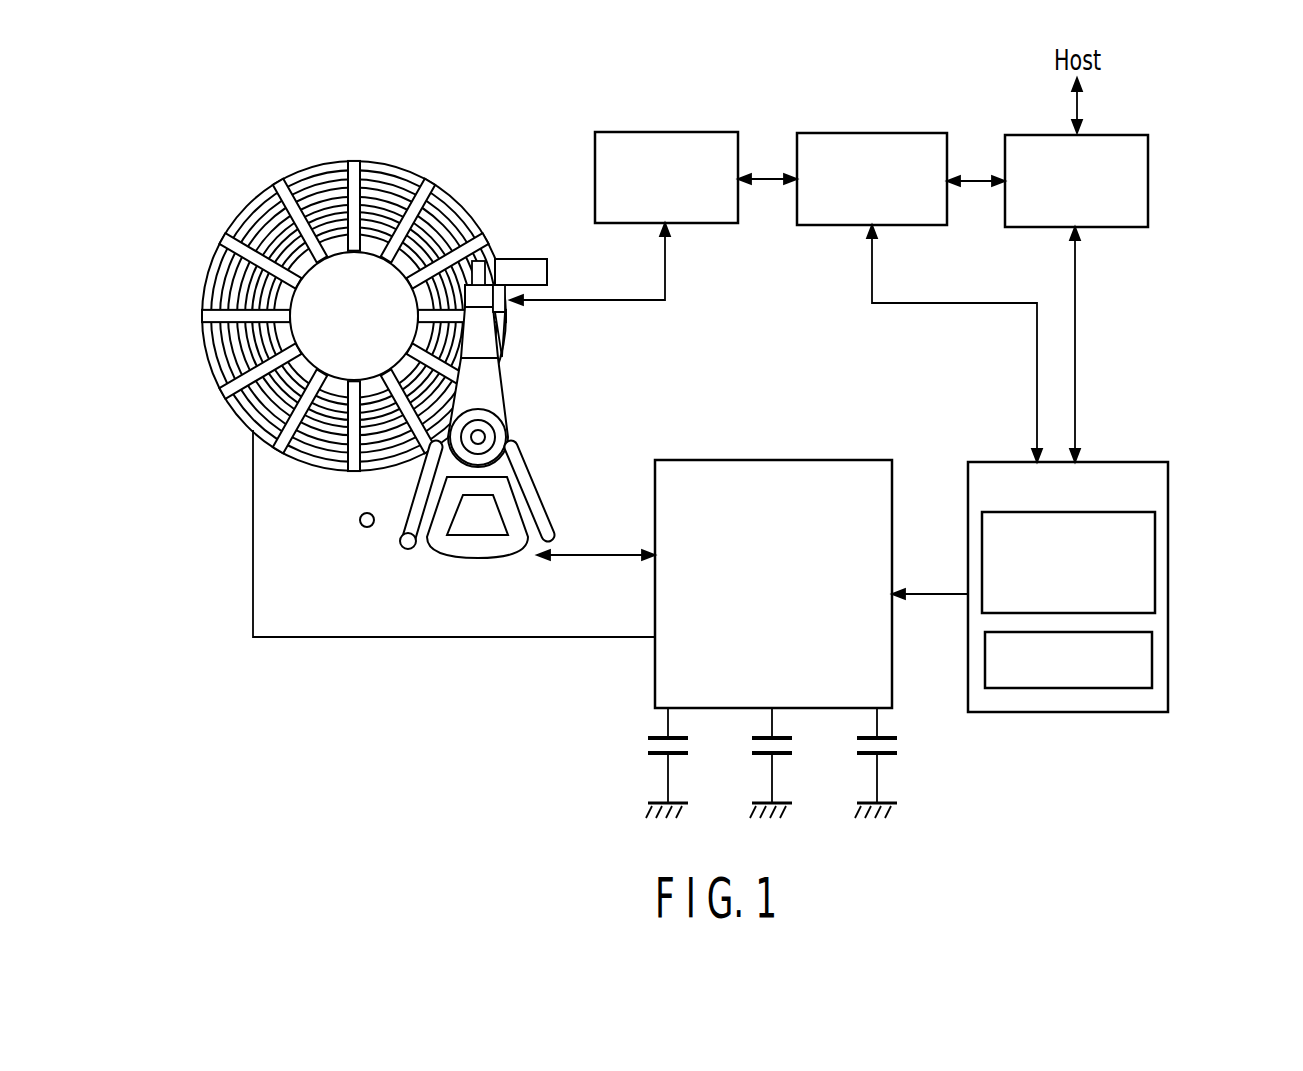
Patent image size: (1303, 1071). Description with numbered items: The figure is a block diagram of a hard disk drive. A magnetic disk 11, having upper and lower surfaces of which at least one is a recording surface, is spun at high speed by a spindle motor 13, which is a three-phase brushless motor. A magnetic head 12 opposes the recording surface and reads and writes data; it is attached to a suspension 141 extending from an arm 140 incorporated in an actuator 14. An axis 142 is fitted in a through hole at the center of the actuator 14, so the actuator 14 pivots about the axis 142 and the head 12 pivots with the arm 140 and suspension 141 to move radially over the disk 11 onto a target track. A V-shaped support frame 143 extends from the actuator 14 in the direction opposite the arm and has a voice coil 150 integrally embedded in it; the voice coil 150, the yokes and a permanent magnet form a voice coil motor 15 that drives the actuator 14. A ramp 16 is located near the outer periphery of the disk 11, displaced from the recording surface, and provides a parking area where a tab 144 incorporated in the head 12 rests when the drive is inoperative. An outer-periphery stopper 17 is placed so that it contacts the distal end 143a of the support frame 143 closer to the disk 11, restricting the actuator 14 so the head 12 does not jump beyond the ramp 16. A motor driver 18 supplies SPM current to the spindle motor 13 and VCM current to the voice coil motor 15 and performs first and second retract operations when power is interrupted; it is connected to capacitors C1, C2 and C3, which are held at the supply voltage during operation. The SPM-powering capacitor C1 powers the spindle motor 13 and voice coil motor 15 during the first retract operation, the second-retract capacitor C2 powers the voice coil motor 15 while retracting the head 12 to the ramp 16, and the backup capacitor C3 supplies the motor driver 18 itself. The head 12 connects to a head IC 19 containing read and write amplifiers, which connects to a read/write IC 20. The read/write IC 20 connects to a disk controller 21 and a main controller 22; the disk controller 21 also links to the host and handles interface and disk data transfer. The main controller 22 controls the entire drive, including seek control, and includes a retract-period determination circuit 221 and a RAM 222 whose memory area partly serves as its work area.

The disk 11 is at (303, 170).
The head 12 is at (470, 292).
The spindle motor 13 is at (332, 293).
The actuator 14 is at (529, 387).
The arm 140 is at (493, 373).
The suspension 141 is at (487, 345).
The axis 142 is at (506, 437).
The support frame 143 is at (420, 507).
The distal end 143a is at (400, 543).
The tab 144 is at (487, 262).
The voice coil motor 15 is at (455, 553).
The voice coil 150 is at (490, 550).
The ramp 16 is at (547, 275).
The outer-periphery stopper 17 is at (360, 519).
The motor driver 18 is at (862, 460).
The head IC 19 is at (660, 132).
The read/write IC 20 is at (870, 133).
The disk controller 21 is at (1150, 183).
The main controller 22 is at (1170, 516).
The retract-period determination circuit 221 is at (1157, 583).
The random access memory 222 is at (1153, 662).
The SPM-powering capacitor C1 is at (899, 752).
The second-retract capacitor C2 is at (794, 752).
The backup capacitor C3 is at (690, 752).